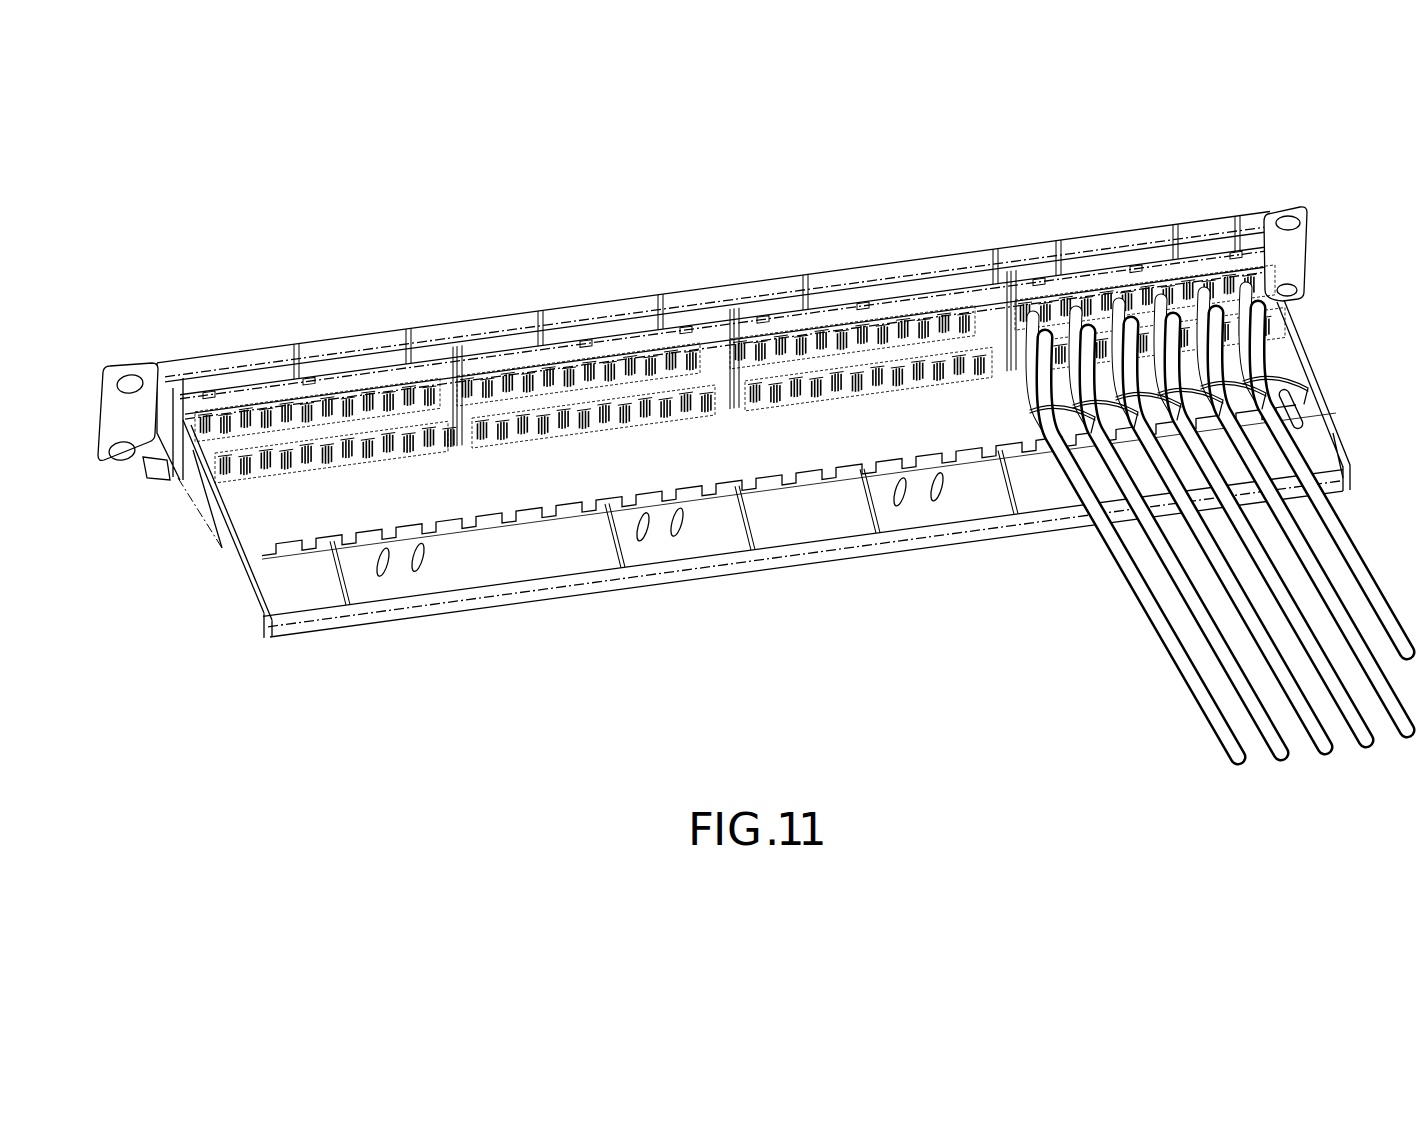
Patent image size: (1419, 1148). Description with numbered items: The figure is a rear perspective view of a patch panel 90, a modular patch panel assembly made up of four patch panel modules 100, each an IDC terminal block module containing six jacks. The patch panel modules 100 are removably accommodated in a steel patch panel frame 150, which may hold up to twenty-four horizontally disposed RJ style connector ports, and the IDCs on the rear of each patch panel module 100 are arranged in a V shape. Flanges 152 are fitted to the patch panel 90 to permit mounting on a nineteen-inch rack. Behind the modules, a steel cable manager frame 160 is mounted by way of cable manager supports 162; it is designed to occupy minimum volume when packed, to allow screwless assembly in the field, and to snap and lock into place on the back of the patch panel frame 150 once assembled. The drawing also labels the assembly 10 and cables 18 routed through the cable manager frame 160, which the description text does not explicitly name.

The patch panel assembly 10 is at (742, 461).
The cables 18 is at (1082, 293).
The patch panel 90 is at (752, 472).
The patch panel module 100 is at (1028, 370).
The steel patch panel frame 150 is at (348, 343).
The flanges 152 is at (118, 412).
The steel cable manager frame 160 is at (1000, 510).
The cable manager support 162 is at (1300, 367).